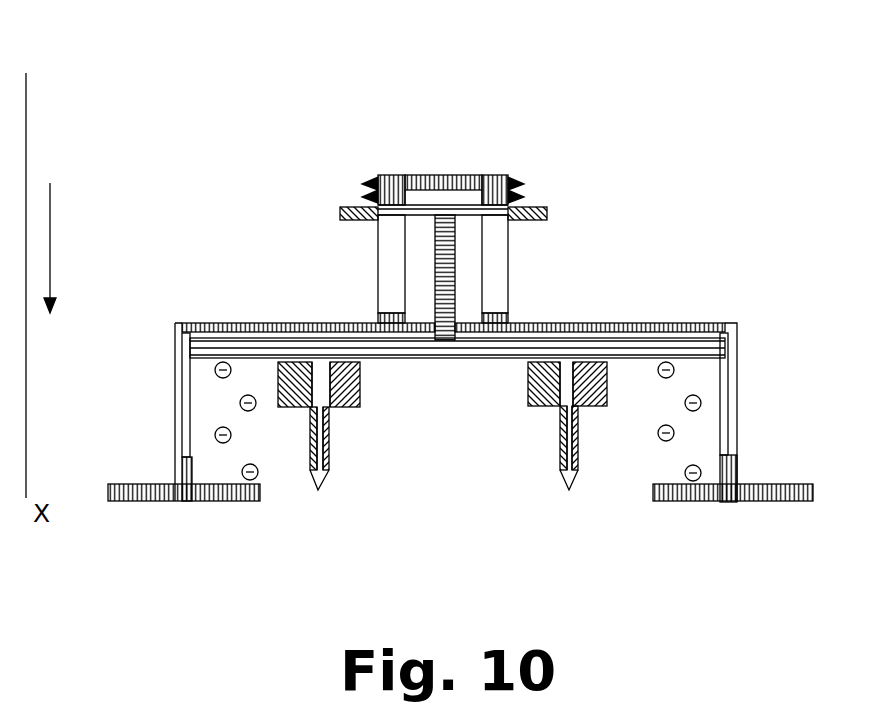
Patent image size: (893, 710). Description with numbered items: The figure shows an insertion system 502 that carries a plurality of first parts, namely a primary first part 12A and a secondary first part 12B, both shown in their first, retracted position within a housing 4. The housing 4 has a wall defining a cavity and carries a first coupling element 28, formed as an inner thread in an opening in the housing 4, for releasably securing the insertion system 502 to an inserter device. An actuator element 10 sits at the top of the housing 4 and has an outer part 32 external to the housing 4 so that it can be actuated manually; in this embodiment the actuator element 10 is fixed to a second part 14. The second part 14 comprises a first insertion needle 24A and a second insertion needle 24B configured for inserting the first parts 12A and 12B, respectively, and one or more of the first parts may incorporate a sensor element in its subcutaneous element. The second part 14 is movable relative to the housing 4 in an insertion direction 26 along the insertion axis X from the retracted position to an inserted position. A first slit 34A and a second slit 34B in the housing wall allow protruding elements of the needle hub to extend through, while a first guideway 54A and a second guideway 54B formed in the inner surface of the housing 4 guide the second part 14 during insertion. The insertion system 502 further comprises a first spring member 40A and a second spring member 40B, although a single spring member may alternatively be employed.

The assembly 502 is at (312, 102).
The first coupling element 28 is at (371, 177).
The actuator element 10 is at (438, 187).
The outer part 32 is at (340, 220).
The first slit 34A is at (497, 263).
The second slit 34B is at (385, 297).
The second part 14 is at (637, 347).
The first guideway 54A is at (722, 410).
The second guideway 54B is at (190, 383).
The housing 4 is at (162, 483).
The primary first part 12A is at (358, 407).
The secondary first part 12B is at (537, 407).
The first insertion needle 24A is at (320, 472).
The second insertion needle 24B is at (567, 476).
The first spring member 40A is at (258, 472).
The second spring member 40B is at (665, 433).
The insertion direction 26 is at (50, 197).